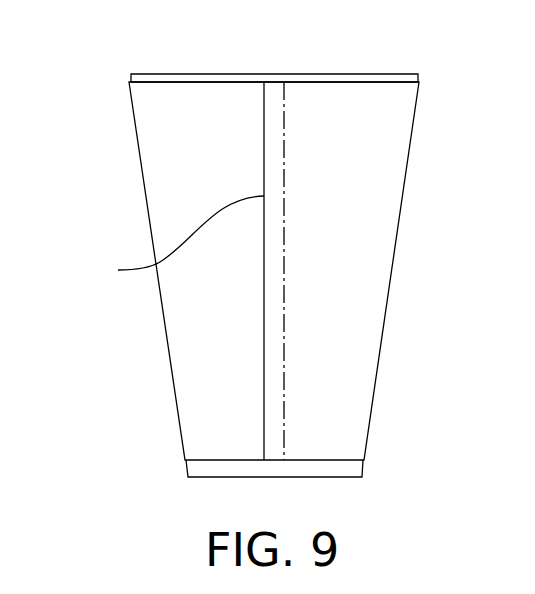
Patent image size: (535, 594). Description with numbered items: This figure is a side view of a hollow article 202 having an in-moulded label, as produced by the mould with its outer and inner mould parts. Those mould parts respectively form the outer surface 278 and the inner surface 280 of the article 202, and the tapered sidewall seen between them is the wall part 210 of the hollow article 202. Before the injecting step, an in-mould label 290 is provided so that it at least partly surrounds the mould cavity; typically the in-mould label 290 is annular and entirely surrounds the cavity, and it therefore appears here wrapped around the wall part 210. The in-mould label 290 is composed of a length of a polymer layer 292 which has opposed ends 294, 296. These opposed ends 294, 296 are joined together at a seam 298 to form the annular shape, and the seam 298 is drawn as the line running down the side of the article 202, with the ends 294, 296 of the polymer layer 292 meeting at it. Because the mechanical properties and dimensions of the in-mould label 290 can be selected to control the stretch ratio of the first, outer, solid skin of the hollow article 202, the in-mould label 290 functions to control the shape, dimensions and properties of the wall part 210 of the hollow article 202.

The hollow article 202 is at (108, 384).
The wall part 210 is at (383, 338).
The outer surface 278 is at (184, 467).
The inner surface 280 is at (158, 74).
The in-mould label 290 is at (212, 302).
The polymer layer 292 is at (350, 244).
The opposed end 294 is at (169, 239).
The opposed end 296 is at (285, 157).
The seam 298 is at (273, 93).